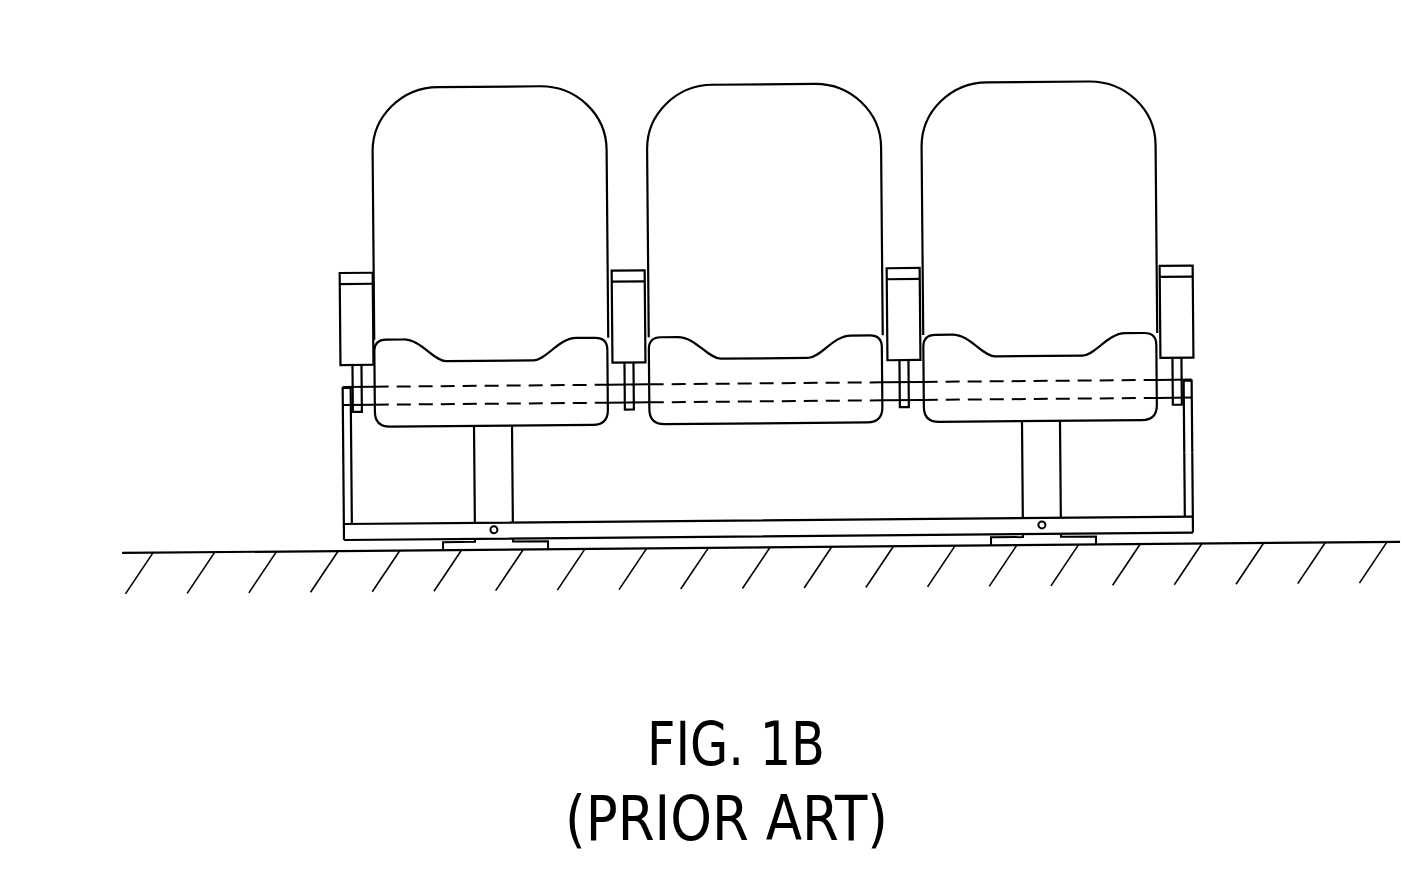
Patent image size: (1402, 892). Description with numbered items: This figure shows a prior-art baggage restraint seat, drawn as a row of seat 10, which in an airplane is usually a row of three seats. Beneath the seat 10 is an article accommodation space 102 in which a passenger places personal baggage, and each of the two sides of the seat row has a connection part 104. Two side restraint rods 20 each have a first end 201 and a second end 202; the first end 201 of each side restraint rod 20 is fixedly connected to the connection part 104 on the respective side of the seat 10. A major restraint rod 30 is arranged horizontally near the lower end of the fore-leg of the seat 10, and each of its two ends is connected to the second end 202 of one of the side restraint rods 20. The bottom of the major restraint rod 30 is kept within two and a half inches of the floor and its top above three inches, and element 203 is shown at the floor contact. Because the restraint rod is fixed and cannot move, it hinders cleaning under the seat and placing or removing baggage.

The seat 10 is at (1145, 178).
The article accommodation space 102 is at (695, 480).
The connection part 104 is at (355, 398).
The side restraint rod 20 is at (768, 460).
The first end 201 is at (347, 418).
The second end 202 is at (347, 513).
The anchor screw 203 is at (494, 535).
The major restraint rod 30 is at (827, 522).